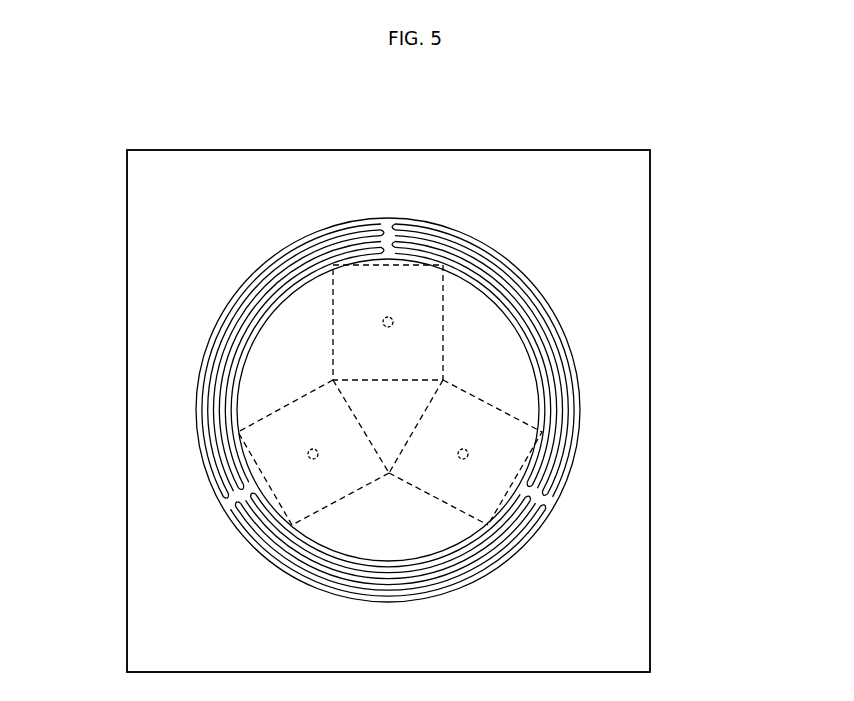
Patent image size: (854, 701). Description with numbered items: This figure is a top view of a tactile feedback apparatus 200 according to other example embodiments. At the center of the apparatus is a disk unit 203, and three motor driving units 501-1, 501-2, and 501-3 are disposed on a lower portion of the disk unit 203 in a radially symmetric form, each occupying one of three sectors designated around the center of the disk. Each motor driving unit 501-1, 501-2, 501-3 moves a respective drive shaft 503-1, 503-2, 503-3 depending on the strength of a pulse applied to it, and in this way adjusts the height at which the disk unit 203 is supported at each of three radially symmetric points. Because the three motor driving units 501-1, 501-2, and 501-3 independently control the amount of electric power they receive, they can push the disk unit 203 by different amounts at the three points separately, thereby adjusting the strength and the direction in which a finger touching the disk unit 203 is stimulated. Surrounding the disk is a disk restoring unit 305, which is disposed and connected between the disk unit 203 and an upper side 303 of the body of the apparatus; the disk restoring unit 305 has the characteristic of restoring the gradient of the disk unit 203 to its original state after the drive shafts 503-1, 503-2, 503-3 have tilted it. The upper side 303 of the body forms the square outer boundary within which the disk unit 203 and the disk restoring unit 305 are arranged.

The tactile feedback apparatus 200 is at (685, 125).
The upper side of a body 303 is at (388, 411).
The disk restoring unit 305 is at (507, 280).
The disk unit 203 is at (500, 360).
The motor driving unit 501-1 is at (503, 413).
The motor driving unit 501-2 is at (270, 413).
The motor driving unit 501-3 is at (332, 300).
The drive shaft 503-1 is at (469, 452).
The drive shaft 503-2 is at (307, 453).
The drive shaft 503-3 is at (388, 316).